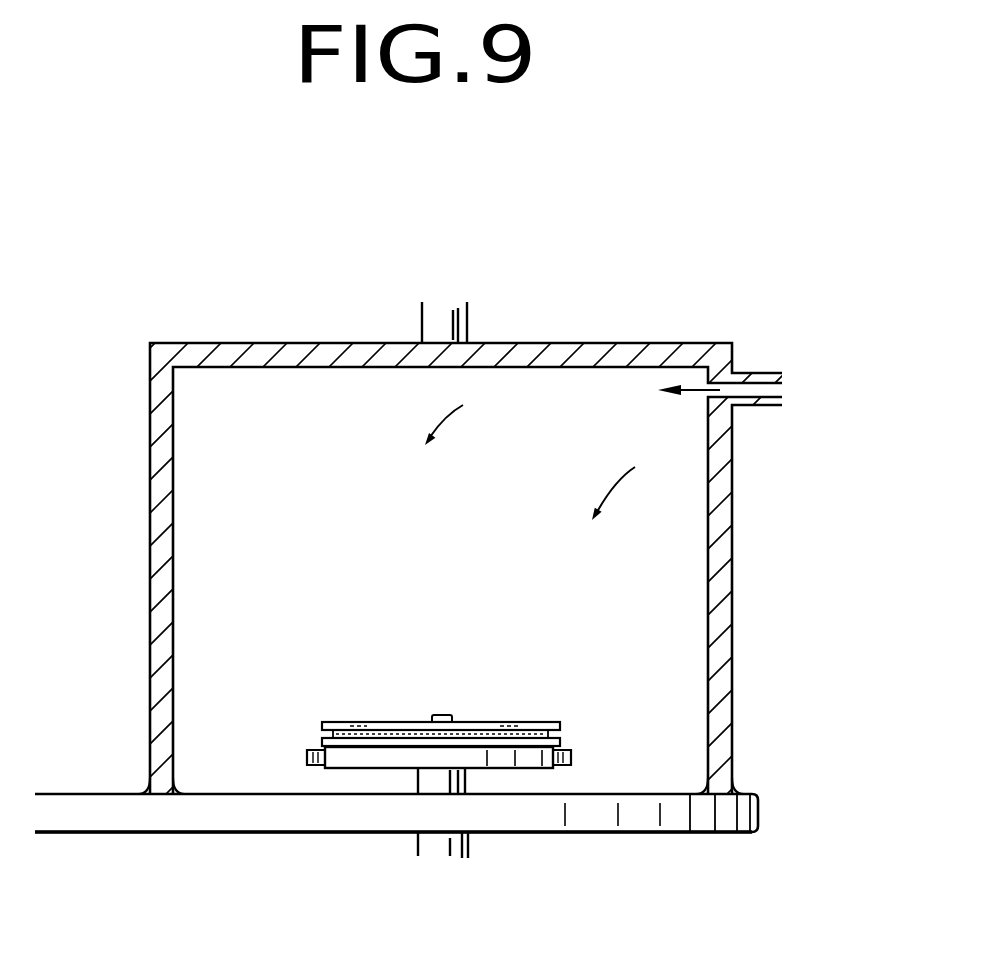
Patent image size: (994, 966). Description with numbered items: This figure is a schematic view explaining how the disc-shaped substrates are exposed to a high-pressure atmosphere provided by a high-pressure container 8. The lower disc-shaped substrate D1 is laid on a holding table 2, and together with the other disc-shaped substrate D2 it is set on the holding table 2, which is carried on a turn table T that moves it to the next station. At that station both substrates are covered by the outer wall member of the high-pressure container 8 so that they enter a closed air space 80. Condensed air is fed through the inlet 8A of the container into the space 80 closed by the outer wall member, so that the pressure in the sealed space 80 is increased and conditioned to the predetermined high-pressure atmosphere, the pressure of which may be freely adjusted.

The high-pressure container 8 is at (148, 500).
The gas inlet 8A is at (778, 388).
The space 80 is at (381, 515).
The holding table 2 is at (305, 757).
The lower disc-shaped substrate D1 is at (552, 746).
The disc-shaped substrate D2 is at (545, 718).
The table T is at (607, 825).